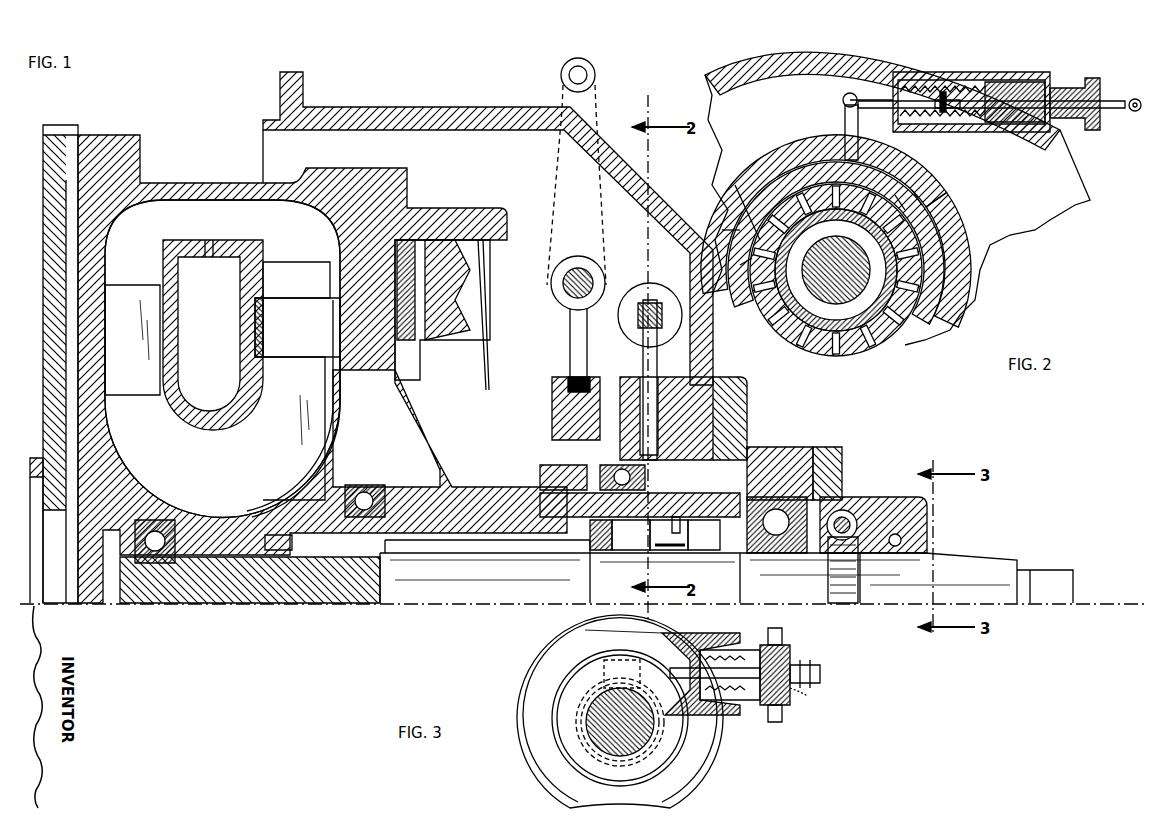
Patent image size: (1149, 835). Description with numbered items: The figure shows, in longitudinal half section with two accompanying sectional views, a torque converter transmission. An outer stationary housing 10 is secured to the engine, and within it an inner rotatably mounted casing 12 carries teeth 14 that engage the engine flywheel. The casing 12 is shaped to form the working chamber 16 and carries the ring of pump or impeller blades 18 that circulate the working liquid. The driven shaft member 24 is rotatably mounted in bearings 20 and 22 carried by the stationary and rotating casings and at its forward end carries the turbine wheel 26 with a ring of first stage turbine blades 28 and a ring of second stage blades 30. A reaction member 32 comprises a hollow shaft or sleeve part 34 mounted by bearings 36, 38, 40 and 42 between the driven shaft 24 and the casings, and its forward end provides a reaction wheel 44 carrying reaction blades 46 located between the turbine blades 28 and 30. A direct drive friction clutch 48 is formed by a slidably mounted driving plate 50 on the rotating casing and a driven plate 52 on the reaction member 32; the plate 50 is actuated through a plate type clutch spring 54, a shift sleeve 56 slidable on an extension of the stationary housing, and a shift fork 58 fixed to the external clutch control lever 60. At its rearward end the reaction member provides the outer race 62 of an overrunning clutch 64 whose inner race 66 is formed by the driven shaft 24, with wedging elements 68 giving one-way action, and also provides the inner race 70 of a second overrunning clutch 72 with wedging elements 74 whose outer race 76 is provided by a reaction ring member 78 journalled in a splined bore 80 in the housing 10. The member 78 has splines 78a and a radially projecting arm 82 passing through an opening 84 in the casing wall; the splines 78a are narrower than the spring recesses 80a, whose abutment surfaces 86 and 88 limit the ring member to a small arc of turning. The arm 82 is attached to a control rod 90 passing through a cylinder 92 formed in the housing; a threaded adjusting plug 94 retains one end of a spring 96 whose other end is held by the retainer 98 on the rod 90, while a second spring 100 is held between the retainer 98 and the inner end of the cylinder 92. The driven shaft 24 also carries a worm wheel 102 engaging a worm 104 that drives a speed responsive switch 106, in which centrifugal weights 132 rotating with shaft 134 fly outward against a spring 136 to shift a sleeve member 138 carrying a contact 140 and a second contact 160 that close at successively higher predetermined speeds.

In FIG. 1, the outer stationary housing 10 is at (484, 103).
In FIG. 2, the outer stationary housing 10 is at (1055, 158).
In FIG. 1, the inner rotatably mounted casing 12 is at (245, 180).
In FIG. 1, the teeth 14 is at (78, 135).
In FIG. 1, the working chamber 16 is at (188, 231).
In FIG. 1, the pump or impeller blades 18 is at (138, 341).
In FIG. 1, the bearing 20 is at (785, 550).
In FIG. 1, the bearing 22 is at (158, 522).
In FIG. 1, the driven shaft member 24 is at (398, 600).
In FIG. 2, the driven shaft member 24 is at (828, 300).
In FIG. 3, the driven shaft member 24 is at (605, 745).
In FIG. 1, the turbine wheel 26 is at (218, 428).
In FIG. 1, the first stage turbine blades 28 is at (300, 286).
In FIG. 1, the second stage blades 30 is at (295, 429).
In FIG. 1, the reaction member 32 is at (322, 548).
In FIG. 1, the hollow shaft or sleeve part 34 is at (487, 556).
In FIG. 1, the bearing 36 is at (600, 550).
In FIG. 1, the bearing 38 is at (278, 550).
In FIG. 1, the bearing 40 is at (620, 465).
In FIG. 1, the bearing 42 is at (345, 500).
In FIG. 1, the reaction wheel 44 is at (333, 386).
In FIG. 1, the reaction blades 46 is at (295, 339).
In FIG. 1, the direct drive friction clutch 48 is at (455, 262).
In FIG. 1, the driving plate 50 is at (438, 250).
In FIG. 1, the driven plate 52 is at (405, 240).
In FIG. 1, the plate type clutch spring 54 is at (489, 342).
In FIG. 1, the shift sleeve 56 is at (552, 395).
In FIG. 1, the shift fork 58 is at (586, 350).
In FIG. 1, the external clutch control lever 60 is at (595, 95).
In FIG. 1, the outer race 62 is at (680, 517).
In FIG. 2, the outer race 62 is at (870, 310).
In FIG. 1, the overrunning clutch 64 is at (700, 550).
In FIG. 2, the overrunning clutch 64 is at (882, 322).
In FIG. 1, the inner race 66 is at (632, 550).
In FIG. 2, the inner race 66 is at (812, 285).
In FIG. 1, the wedging elements 68 is at (660, 550).
In FIG. 2, the wedging elements 68 is at (790, 290).
In FIG. 1, the inner race 70 is at (760, 465).
In FIG. 2, the inner race 70 is at (888, 320).
In FIG. 1, the second overrunning clutch 72 is at (715, 478).
In FIG. 2, the second overrunning clutch 72 is at (760, 268).
In FIG. 1, the wedging elements 74 is at (705, 475).
In FIG. 2, the wedging elements 74 is at (930, 300).
In FIG. 1, the outer race 76 is at (700, 470).
In FIG. 2, the outer race 76 is at (900, 320).
In FIG. 1, the reaction ring member 78 is at (708, 382).
In FIG. 2, the reaction ring member 78 is at (800, 170).
In FIG. 2, the splines 78a is at (905, 200).
In FIG. 1, the splined bore 80 is at (680, 385).
In FIG. 2, the splined bore 80 is at (800, 175).
In FIG. 2, the spring recesses 80a is at (745, 235).
In FIG. 1, the radially projecting arm 82 is at (660, 338).
In FIG. 2, the radially projecting arm 82 is at (843, 100).
In FIG. 2, the opening 84 is at (845, 125).
In FIG. 2, the abutment surface 86 is at (945, 255).
In FIG. 2, the abutment surface 88 is at (920, 232).
In FIG. 2, the control rod 90 is at (1032, 82).
In FIG. 2, the cylinder 92 is at (940, 80).
In FIG. 2, the threaded adjusting plug 94 is at (1092, 78).
In FIG. 2, the spring 96 is at (978, 80).
In FIG. 2, the retainer 98 is at (943, 114).
In FIG. 2, the second spring 100 is at (910, 86).
In FIG. 1, the worm wheel 102 is at (855, 603).
In FIG. 3, the worm wheel 102 is at (575, 695).
In FIG. 1, the worm 104 is at (885, 503).
In FIG. 3, the worm 104 is at (592, 630).
In FIG. 3, the speed responsive switch 106 is at (725, 712).
In FIG. 3, the centrifugal weights 132 is at (725, 640).
In FIG. 3, the shaft 134 is at (700, 660).
In FIG. 3, the spring 136 is at (668, 640).
In FIG. 3, the sleeve member 138 is at (822, 670).
In FIG. 3, the contact 140 is at (790, 650).
In FIG. 3, the second contact 160 is at (800, 692).